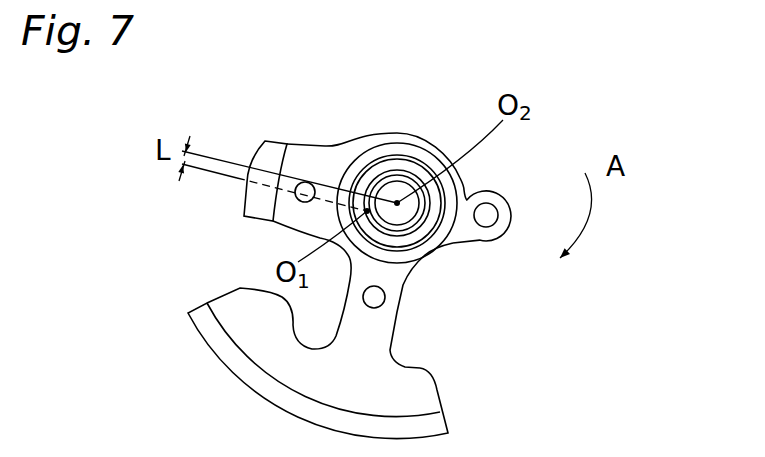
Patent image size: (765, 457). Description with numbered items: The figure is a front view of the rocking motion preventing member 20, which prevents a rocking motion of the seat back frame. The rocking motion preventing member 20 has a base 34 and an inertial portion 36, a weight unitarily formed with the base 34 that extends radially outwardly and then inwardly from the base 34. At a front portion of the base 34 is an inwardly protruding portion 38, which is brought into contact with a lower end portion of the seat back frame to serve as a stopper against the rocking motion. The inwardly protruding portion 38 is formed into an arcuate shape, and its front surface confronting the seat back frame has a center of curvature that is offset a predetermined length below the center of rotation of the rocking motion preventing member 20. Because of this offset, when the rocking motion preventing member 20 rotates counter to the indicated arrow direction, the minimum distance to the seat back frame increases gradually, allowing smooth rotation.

The rocking motion preventing member 20 is at (361, 136).
The base 34 is at (467, 231).
The inertial portion 36 is at (430, 432).
The inwardly protruding portion 38 is at (275, 141).